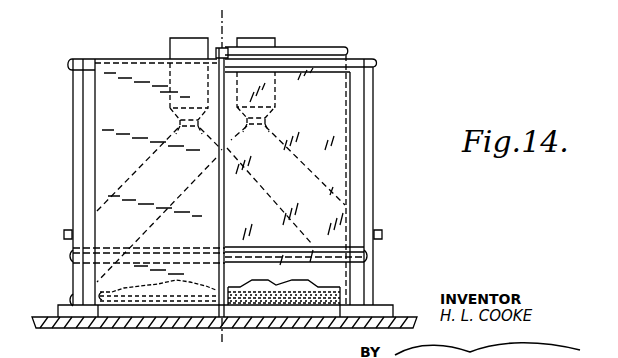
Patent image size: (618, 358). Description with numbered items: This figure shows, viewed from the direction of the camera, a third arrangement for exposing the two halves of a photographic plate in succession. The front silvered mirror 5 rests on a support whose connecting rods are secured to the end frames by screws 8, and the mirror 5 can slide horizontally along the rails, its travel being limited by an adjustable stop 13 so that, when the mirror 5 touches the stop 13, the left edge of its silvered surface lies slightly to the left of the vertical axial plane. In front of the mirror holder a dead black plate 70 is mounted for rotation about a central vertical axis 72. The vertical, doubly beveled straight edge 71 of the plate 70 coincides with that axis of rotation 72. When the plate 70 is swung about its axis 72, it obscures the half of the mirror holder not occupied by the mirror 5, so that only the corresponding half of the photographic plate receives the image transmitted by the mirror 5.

The front silvered mirror 5 is at (346, 48).
The screws 8 is at (70, 63).
The adjustable stop 13 is at (64, 235).
The dead black plate 70 is at (79, 184).
The doubly beveled straight edge 71 is at (226, 201).
The vertical axis of rotation 72 is at (224, 48).